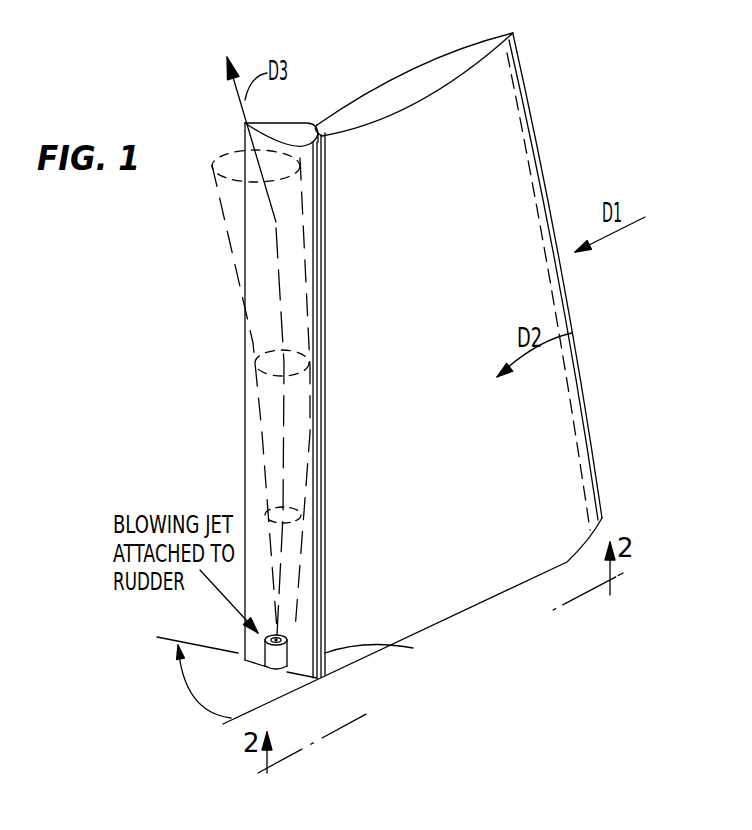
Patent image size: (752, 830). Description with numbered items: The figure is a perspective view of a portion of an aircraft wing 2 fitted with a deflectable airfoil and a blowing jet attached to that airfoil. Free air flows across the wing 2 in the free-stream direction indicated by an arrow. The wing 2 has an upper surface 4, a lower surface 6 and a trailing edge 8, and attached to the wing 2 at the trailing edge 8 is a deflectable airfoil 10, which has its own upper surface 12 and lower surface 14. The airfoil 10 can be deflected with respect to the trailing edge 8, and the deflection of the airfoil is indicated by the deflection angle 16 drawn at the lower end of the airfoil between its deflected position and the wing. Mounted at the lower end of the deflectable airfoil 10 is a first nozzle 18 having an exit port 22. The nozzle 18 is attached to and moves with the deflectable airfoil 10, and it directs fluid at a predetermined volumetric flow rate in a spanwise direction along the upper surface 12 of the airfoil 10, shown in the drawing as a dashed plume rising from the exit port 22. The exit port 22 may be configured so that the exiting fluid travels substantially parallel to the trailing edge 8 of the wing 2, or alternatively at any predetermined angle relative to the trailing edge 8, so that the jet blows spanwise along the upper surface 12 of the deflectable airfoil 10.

The wing 2 is at (412, 371).
The upper surface 4 is at (407, 108).
The lower surface 6 is at (392, 80).
The trailing edge 8 is at (379, 649).
The deflectable airfoil 10 is at (317, 680).
The upper surface 12 is at (292, 393).
The lower surface 14 is at (283, 123).
The deflection angle 16 is at (188, 682).
The first nozzle 18 is at (277, 671).
The exit port 22 is at (280, 633).